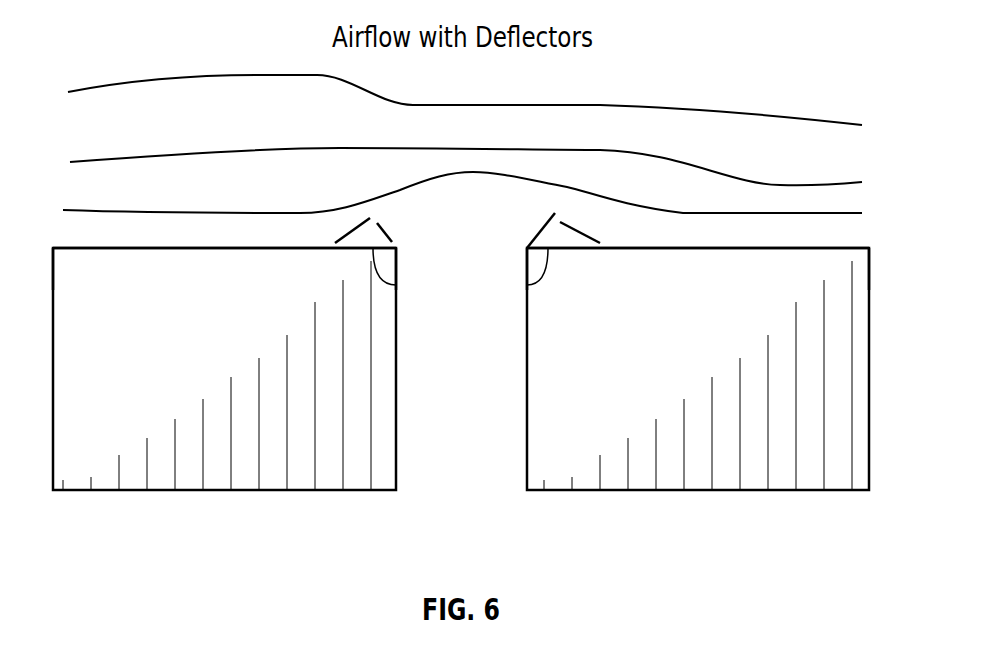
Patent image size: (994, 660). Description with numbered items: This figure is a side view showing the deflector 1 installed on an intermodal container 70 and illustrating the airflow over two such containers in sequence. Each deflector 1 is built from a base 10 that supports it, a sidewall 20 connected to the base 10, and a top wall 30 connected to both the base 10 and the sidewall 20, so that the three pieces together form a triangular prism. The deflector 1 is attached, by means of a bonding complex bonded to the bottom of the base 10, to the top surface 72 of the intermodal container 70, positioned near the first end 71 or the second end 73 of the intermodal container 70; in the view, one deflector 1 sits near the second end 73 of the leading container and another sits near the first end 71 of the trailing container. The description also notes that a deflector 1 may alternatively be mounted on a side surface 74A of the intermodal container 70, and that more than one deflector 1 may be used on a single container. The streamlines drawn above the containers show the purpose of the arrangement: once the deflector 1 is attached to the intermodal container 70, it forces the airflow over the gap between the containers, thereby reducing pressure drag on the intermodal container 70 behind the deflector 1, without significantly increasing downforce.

The deflector 1 is at (396, 218).
The base 10 is at (396, 287).
The sidewall 20 is at (386, 235).
The top wall 30 is at (352, 230).
The intermodal container 70 is at (380, 388).
The first end 71 is at (53, 248).
The top surface 72 is at (225, 248).
The second end 73 is at (396, 246).
The side surface 74A is at (185, 479).